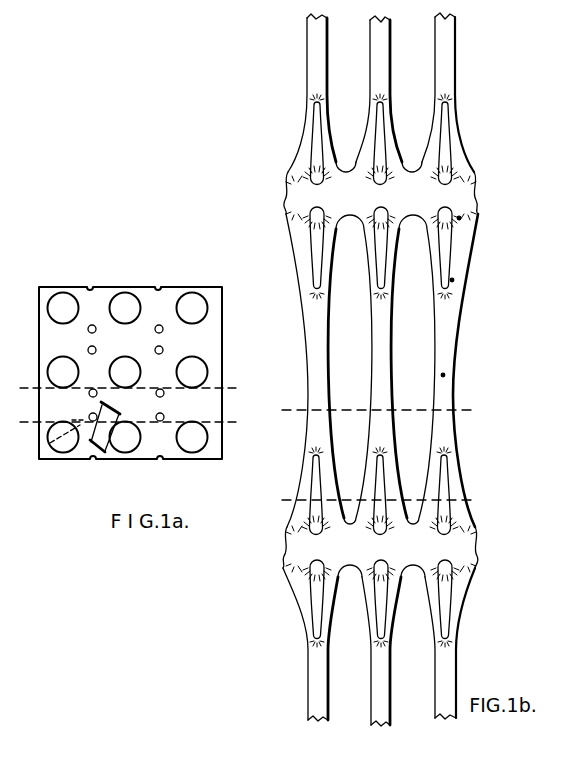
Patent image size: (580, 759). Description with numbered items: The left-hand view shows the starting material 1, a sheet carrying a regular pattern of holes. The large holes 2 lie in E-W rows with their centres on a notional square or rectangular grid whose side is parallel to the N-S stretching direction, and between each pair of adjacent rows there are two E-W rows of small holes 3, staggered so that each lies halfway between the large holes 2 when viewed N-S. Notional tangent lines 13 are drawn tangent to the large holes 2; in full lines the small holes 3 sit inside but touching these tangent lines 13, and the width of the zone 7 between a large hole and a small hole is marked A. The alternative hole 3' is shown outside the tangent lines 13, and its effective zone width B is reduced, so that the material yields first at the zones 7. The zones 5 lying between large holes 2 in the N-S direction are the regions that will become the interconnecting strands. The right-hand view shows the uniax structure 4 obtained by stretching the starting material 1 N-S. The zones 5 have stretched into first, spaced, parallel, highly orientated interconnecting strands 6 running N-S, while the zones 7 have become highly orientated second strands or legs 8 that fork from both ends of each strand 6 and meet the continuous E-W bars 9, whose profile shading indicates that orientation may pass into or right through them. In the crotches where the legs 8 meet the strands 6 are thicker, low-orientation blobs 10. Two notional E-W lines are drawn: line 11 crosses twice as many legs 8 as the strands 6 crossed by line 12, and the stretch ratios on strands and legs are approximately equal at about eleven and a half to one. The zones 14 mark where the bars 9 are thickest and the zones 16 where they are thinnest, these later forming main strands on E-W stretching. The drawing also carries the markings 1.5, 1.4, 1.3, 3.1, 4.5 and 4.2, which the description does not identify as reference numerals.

In FIG. 1A, the starting material 1 is at (165, 285).
In FIG. 1A, the large holes 2 is at (63, 302).
In FIG. 1B, the large holes 2 is at (342, 313).
In FIG. 1A, the small holes 3 is at (56, 340).
In FIG. 1B, the small holes 3 is at (381, 248).
In FIG. 1A, the hole 3' is at (46, 441).
In FIG. 1A, the zones 5 is at (160, 307).
In FIG. 1A, the zones 7 is at (145, 325).
In FIG. 1A, the tangent lines 13 is at (36, 389).
In FIG. 1A, the zones 14 is at (193, 401).
In FIG. 1B, the zones 14 is at (349, 193).
In FIG. 1A, the zones 16 is at (162, 402).
In FIG. 1B, the zones 16 is at (315, 193).
In FIG. 1A, the width of zone A is at (118, 396).
In FIG. 1A, the effective width of zone B is at (97, 455).
In FIG. 1B, the uniax structure 4 is at (298, 111).
In FIG. 1B, the bars 9 is at (300, 192).
In FIG. 1B, the first interconnecting strands 6 is at (372, 336).
In FIG. 1B, the legs 8 is at (368, 258).
In FIG. 1B, the blobs 10 is at (315, 290).
In FIG. 1B, the edge point 1.5 is at (462, 219).
In FIG. 1B, the edge point 1.4 is at (458, 251).
In FIG. 1B, the edge point 1.3 is at (446, 375).
In FIG. 1B, the notional E-W line 12 is at (366, 410).
In FIG. 1B, the notional E-W line 11 is at (366, 500).
In FIG. 1B, the slot tip 3.1 is at (447, 450).
In FIG. 1B, the beam edge 4.5 is at (413, 545).
In FIG. 1B, the beam 4.2 is at (431, 543).